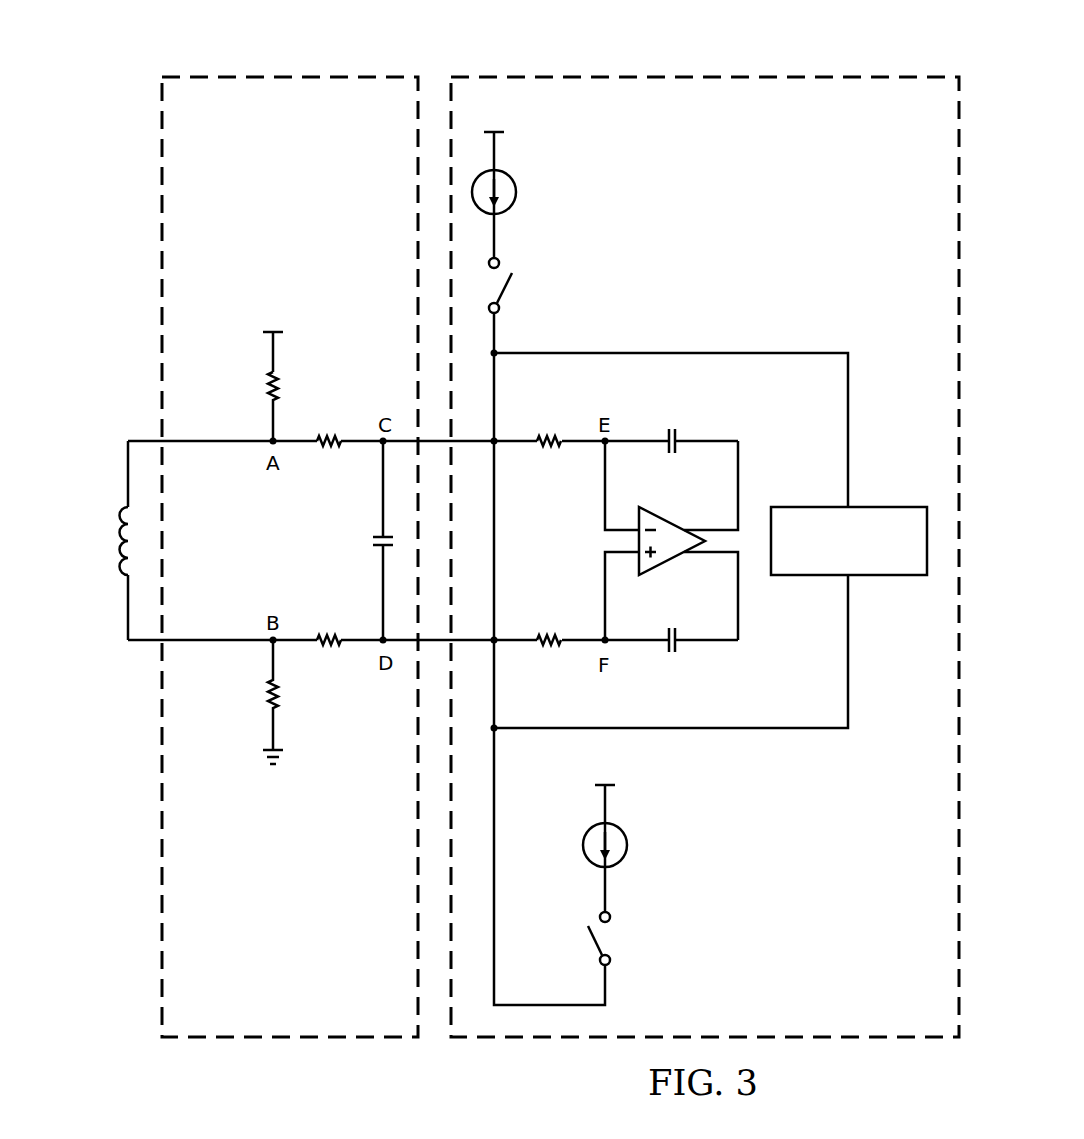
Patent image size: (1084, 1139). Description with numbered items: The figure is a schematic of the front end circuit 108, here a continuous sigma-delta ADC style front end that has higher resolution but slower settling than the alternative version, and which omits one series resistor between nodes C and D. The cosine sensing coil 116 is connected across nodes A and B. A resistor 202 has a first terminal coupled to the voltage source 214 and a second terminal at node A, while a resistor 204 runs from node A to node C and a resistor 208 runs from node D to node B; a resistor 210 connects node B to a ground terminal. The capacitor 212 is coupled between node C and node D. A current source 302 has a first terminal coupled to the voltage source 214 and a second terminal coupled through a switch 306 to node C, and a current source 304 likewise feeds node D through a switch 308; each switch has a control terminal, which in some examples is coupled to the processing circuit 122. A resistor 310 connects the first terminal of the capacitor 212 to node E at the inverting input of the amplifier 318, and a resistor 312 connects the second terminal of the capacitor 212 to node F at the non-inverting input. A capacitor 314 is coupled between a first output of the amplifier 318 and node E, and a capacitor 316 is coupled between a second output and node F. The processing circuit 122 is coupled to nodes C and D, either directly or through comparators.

The front end circuit 108 is at (245, 70).
The cosine sensing coil 116 is at (112, 532).
The processing circuit 122 is at (882, 507).
The resistor 202 is at (268, 385).
The resistor 204 is at (320, 437).
The resistor 208 is at (320, 648).
The resistor 210 is at (268, 697).
The capacitor 212 is at (375, 540).
The voltage source 214 is at (263, 333).
The current source 302 is at (516, 192).
The current source 304 is at (628, 846).
The switch 306 is at (505, 293).
The switch 308 is at (593, 946).
The resistor 310 is at (556, 437).
The resistor 312 is at (556, 645).
The capacitor 314 is at (672, 428).
The capacitor 316 is at (672, 654).
The amplifier 318 is at (660, 515).